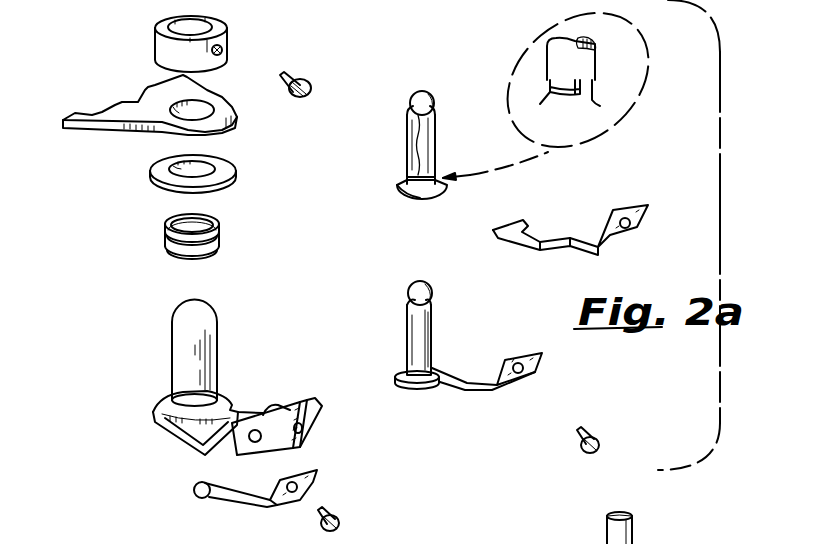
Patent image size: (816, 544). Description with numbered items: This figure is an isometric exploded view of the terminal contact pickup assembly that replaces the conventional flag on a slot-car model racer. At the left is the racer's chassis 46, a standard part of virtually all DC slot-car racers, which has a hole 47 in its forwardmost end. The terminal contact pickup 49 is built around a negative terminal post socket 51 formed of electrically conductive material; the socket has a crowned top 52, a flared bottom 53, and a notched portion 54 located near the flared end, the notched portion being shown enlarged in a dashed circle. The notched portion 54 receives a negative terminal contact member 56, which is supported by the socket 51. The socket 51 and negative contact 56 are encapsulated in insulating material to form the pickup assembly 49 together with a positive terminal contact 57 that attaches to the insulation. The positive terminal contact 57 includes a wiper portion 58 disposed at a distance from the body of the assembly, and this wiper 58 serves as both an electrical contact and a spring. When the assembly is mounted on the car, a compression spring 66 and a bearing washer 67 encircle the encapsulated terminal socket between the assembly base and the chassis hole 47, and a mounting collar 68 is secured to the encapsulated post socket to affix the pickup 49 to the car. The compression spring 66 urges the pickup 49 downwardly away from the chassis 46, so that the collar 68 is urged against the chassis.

The chassis 46 is at (155, 136).
The hole 47 is at (188, 113).
The terminal contact pickup 49 is at (172, 443).
The negative terminal post socket 51 is at (405, 148).
The crowned top 52 is at (412, 93).
The flared bottom 53 is at (387, 188).
The notched portion 54 is at (568, 88).
The negative terminal contact member 56 is at (580, 250).
The positive terminal contact 57 is at (317, 488).
The wiper portion 58 is at (212, 511).
The compression spring 66 is at (222, 230).
The bearing washer 67 is at (240, 172).
The mounting collar 68 is at (236, 30).